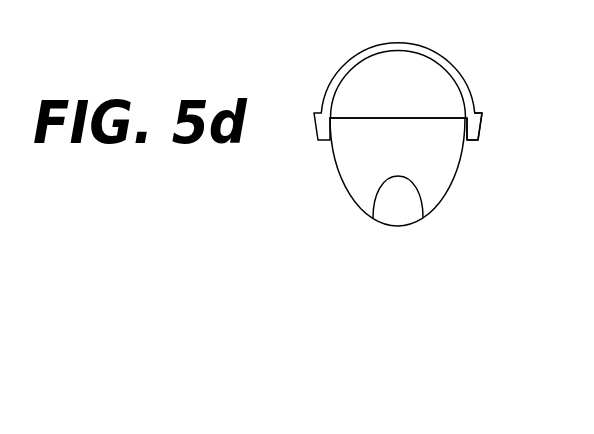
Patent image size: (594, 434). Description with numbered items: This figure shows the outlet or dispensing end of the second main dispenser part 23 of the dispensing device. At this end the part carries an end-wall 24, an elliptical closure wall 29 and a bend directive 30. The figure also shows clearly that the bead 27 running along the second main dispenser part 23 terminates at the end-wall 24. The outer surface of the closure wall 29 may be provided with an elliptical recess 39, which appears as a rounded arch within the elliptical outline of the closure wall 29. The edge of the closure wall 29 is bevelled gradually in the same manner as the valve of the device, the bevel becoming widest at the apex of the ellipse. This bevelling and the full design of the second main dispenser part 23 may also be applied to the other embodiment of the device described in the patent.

The second main dispenser part 23 is at (345, 60).
The end-wall 24 is at (397, 103).
The bend directive 30 is at (415, 118).
The bead 27 is at (472, 123).
The elliptical closure wall 29 is at (443, 163).
The elliptical recess 39 is at (410, 207).